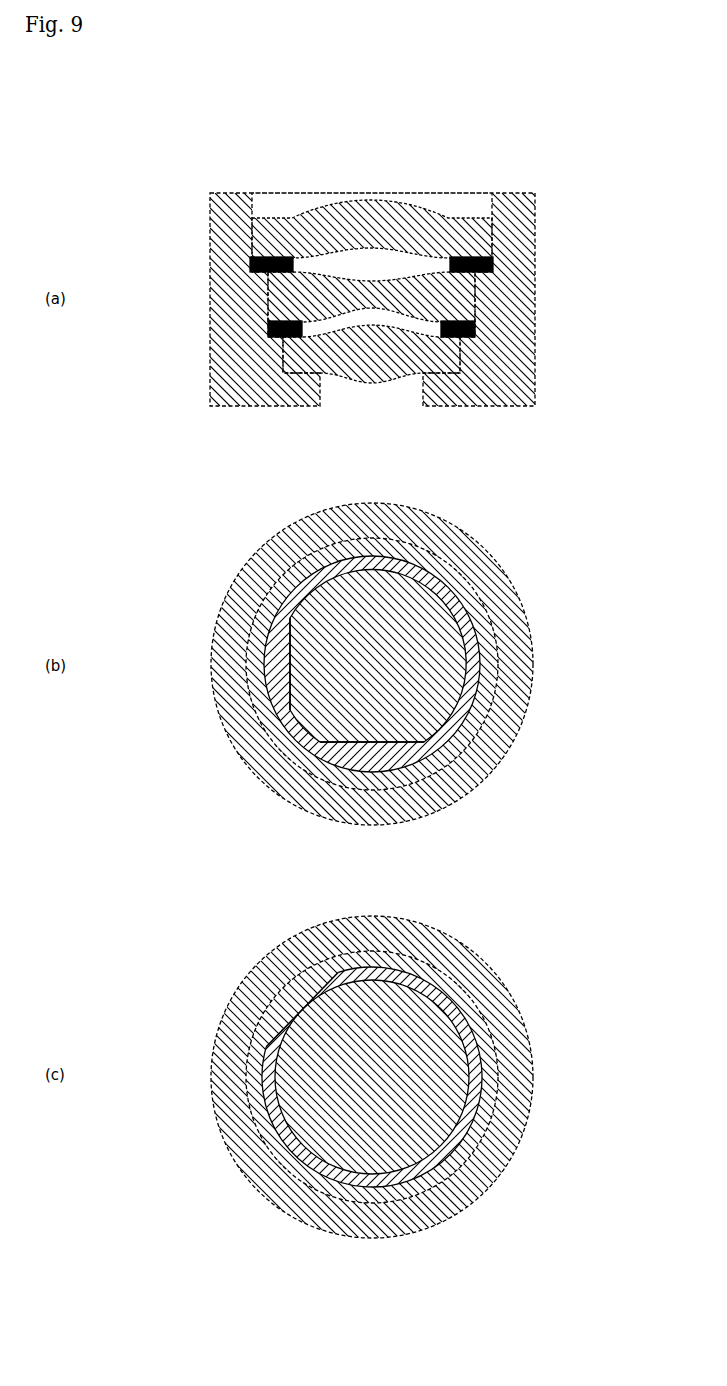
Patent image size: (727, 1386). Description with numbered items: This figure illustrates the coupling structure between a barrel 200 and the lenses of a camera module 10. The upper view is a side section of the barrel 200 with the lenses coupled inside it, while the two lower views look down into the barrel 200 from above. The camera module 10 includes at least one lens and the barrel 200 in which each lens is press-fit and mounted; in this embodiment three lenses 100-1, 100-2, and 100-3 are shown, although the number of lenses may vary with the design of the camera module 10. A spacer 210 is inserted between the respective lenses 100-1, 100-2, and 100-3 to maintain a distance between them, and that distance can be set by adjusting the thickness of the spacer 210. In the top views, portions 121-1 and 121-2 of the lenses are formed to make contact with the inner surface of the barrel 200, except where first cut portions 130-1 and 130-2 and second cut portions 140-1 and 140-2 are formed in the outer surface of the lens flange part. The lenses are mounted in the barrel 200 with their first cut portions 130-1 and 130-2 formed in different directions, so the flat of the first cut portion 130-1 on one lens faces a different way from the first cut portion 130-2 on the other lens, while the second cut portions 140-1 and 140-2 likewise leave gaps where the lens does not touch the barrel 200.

The camera module 10 is at (192, 190).
The barrel 200 is at (517, 210).
The spacer 210 is at (268, 337).
The lens 100-1 is at (433, 357).
The lens 100-2 is at (457, 293).
The lens 100-3 is at (468, 237).
The portion of the lens 121-1 is at (487, 578).
The portion of the lens 121-2 is at (282, 1145).
The first cut portion 130-1 is at (368, 743).
The first cut portion 130-2 is at (292, 1010).
The second cut portion 140-1 is at (282, 670).
The second cut portion 140-2 is at (460, 992).